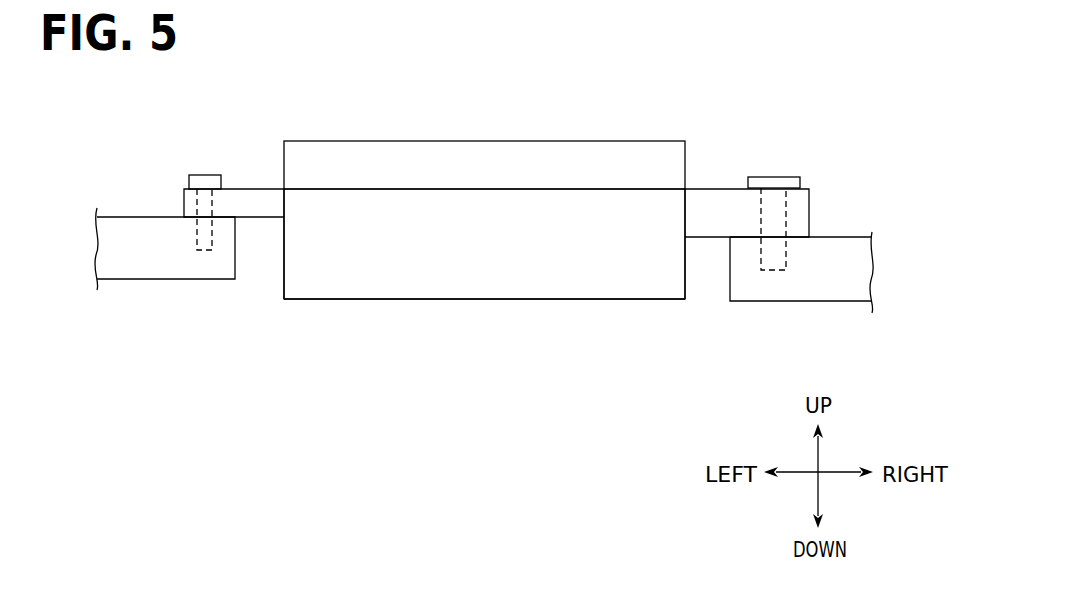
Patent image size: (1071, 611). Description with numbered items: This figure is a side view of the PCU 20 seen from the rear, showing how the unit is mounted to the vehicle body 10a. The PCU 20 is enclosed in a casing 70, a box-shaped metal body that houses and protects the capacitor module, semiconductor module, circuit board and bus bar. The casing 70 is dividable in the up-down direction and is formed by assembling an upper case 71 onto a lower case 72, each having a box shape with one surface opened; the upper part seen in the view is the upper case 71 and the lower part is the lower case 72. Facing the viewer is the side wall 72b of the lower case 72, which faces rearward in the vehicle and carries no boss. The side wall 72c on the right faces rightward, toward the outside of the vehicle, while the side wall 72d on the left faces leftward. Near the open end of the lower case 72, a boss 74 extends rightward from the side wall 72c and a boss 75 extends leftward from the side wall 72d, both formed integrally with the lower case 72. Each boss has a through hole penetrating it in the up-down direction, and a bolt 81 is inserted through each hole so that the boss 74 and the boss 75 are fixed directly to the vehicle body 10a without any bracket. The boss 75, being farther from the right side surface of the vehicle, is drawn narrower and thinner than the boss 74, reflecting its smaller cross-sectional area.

The PCU 20 is at (480, 215).
The casing 70 is at (515, 230).
The upper case 71 is at (685, 141).
The lower case 72 is at (686, 300).
The side wall 72b is at (490, 267).
The side wall 72c is at (686, 268).
The side wall 72d is at (283, 265).
The boss 74 is at (810, 211).
The boss 75 is at (184, 204).
The bolt 81 is at (205, 183).
The vehicle body 10a is at (117, 248).